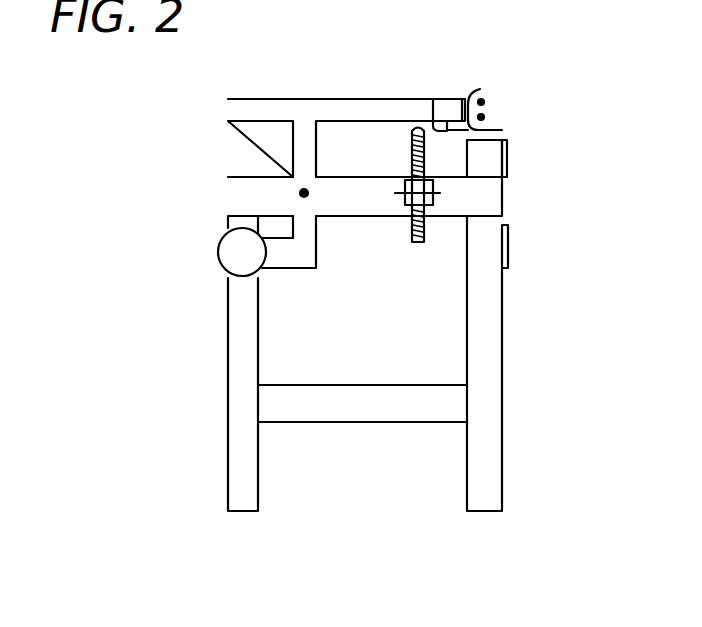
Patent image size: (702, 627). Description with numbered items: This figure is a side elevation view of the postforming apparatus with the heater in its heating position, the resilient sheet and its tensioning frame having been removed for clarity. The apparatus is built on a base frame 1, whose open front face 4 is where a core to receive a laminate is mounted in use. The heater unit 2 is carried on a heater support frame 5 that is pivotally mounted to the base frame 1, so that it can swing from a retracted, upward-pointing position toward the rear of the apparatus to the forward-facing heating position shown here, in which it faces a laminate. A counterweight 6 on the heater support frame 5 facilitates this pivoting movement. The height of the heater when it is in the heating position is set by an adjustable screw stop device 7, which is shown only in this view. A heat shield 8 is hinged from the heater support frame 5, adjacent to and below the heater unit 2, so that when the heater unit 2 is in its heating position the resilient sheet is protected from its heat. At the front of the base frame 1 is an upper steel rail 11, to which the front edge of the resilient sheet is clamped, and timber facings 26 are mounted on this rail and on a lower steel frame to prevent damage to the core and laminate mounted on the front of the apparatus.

The base frame 1 is at (517, 319).
The heater unit 2 is at (490, 109).
The open front face 4 is at (527, 192).
The heater support frame 5 is at (247, 105).
The counterweight 6 is at (229, 244).
The adjustable screw stop device 7 is at (410, 232).
The heat shield 8 is at (436, 121).
The upper steel rail 11 is at (476, 153).
The timber facings 26 is at (507, 148).